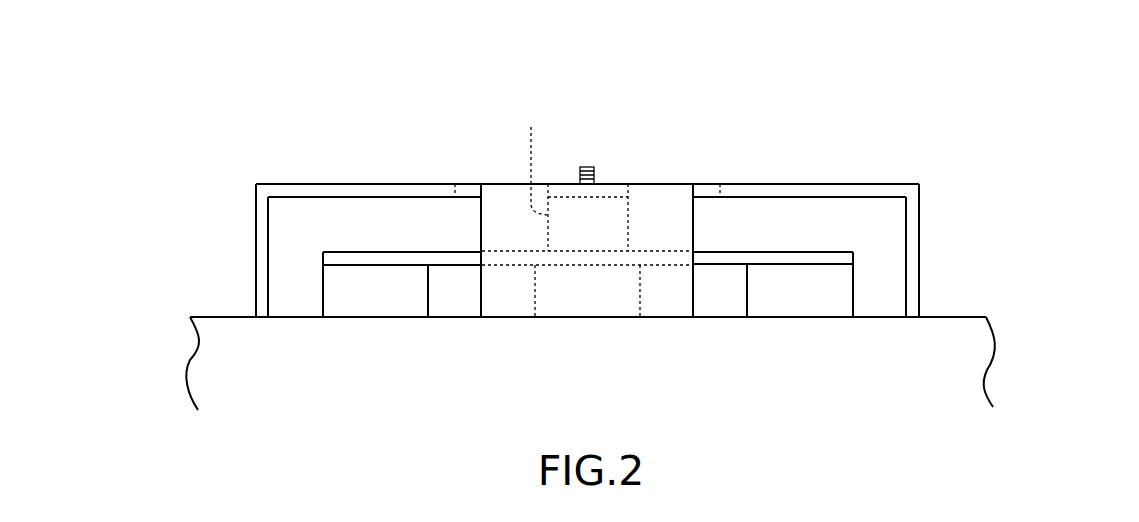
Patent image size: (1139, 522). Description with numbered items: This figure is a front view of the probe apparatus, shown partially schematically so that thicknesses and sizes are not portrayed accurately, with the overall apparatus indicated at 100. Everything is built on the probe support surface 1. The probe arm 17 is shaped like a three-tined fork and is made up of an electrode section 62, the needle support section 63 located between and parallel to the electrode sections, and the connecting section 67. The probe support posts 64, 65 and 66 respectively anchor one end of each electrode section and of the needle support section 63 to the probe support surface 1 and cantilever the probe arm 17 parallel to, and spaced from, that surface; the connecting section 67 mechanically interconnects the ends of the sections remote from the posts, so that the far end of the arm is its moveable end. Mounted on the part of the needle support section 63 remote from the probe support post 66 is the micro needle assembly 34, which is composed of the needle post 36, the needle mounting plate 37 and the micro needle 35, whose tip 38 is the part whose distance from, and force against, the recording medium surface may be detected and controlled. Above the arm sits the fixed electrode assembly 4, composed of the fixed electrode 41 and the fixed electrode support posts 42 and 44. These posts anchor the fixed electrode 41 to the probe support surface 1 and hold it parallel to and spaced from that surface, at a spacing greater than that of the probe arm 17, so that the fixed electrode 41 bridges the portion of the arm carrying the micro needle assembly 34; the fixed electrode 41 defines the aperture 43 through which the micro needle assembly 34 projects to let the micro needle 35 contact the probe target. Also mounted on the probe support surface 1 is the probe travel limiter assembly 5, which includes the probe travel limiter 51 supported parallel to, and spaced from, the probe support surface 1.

The probe support surface 1 is at (967, 317).
The fixed electrode assembly 4 is at (930, 167).
The probe travel limiter assembly 5 is at (703, 284).
The probe arm 17 is at (750, 233).
The micro needle assembly 34 is at (640, 210).
The micro needle 35 is at (597, 174).
The needle post 36 is at (527, 149).
The needle mounting plate 37 is at (622, 183).
The tip 38 is at (587, 167).
The fixed electrode 41 is at (357, 184).
The fixed electrode support post 42 is at (921, 233).
The aperture 43 is at (465, 180).
The fixed electrode support post 44 is at (256, 233).
The probe travel limiter 51 is at (693, 303).
The electrode section 62 is at (372, 252).
The needle support section 63 is at (793, 252).
The probe support post 64 is at (375, 308).
The probe support post 65 is at (795, 308).
The probe support post 66 is at (577, 308).
The connecting section 67 is at (453, 267).
The package assembly 100 is at (302, 120).